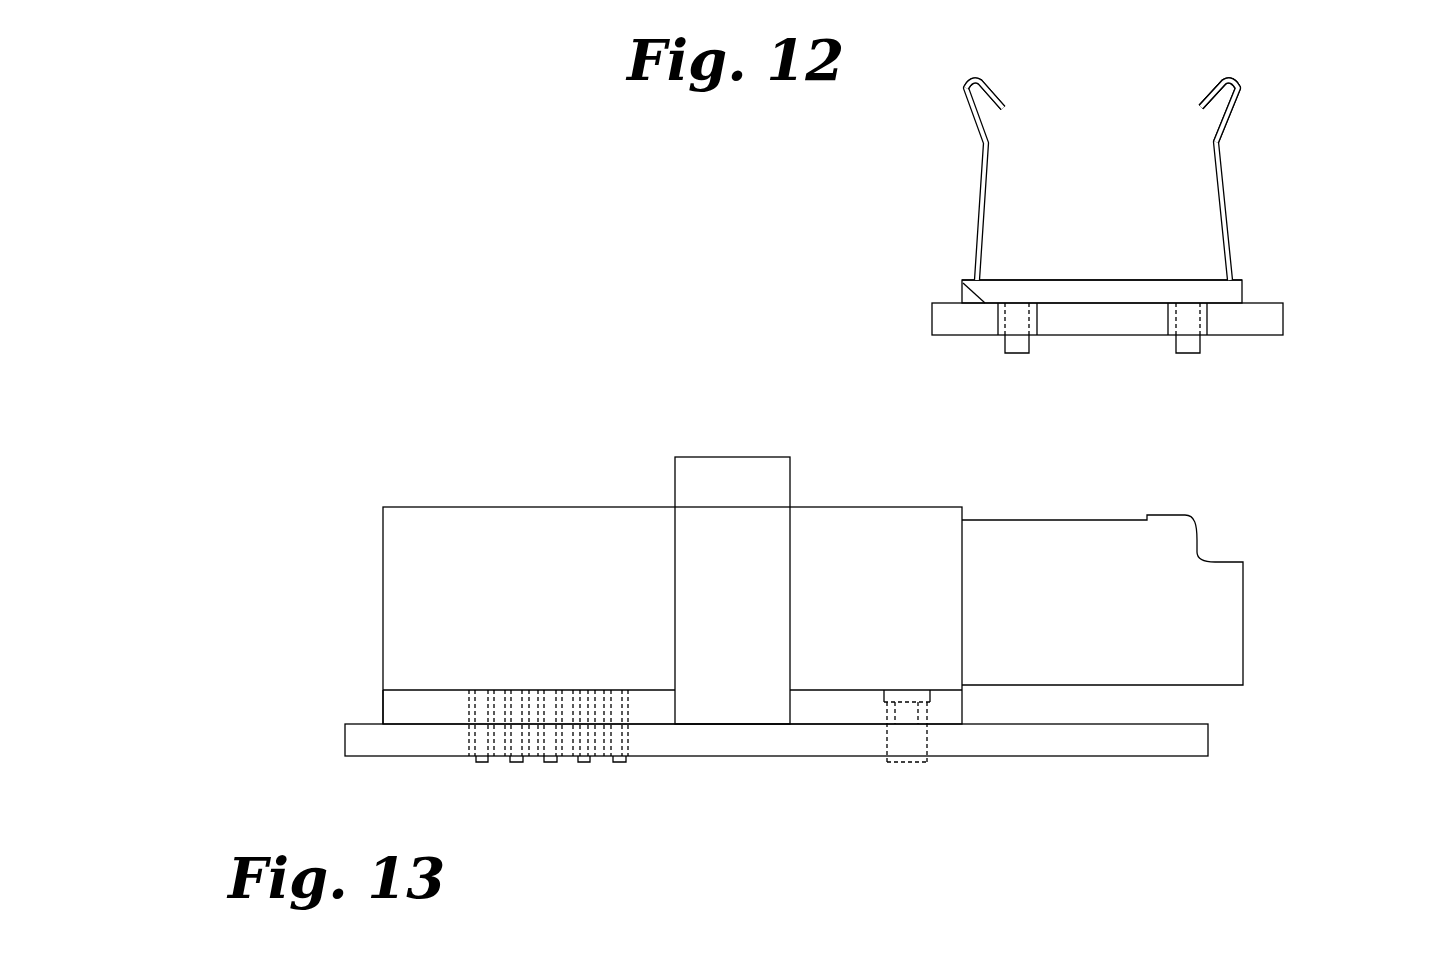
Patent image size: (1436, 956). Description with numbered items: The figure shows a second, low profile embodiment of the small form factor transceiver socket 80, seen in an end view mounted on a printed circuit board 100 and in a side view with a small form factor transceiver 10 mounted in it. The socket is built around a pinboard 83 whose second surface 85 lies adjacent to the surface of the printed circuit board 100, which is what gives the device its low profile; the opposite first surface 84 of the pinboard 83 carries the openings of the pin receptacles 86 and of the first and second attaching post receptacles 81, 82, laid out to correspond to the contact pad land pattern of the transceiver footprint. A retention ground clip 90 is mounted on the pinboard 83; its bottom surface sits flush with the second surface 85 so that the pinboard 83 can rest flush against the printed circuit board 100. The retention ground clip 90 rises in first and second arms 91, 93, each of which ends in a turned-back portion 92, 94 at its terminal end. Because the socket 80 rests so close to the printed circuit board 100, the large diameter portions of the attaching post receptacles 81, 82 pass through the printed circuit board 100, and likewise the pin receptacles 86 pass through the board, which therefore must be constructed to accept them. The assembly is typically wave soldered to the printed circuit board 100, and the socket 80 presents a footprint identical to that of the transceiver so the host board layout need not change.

In FIG. 13, the small form factor transceiver 10 is at (1040, 520).
In FIG. 12, the small form factor transceiver socket 80 is at (1243, 293).
In FIG. 13, the small form factor transceiver socket 80 is at (415, 702).
In FIG. 12, the first attaching post receptacle 81 is at (1022, 354).
In FIG. 13, the first attaching post receptacle 81 is at (910, 758).
In FIG. 12, the second attaching post receptacle 82 is at (1188, 354).
In FIG. 13, the pinboard 83 is at (383, 713).
In FIG. 12, the first surface 84 is at (1112, 279).
In FIG. 12, the second surface 85 is at (963, 283).
In FIG. 13, the pin receptacles 86 is at (483, 763).
In FIG. 12, the retention ground clip 90 is at (1227, 213).
In FIG. 13, the retention ground clip 90 is at (740, 457).
In FIG. 12, the first arm 91 is at (1245, 90).
In FIG. 12, the turned-back portion 92 is at (1205, 93).
In FIG. 12, the second arm 93 is at (980, 173).
In FIG. 12, the turned-back portion 94 is at (962, 92).
In FIG. 12, the printed circuit board 100 is at (1238, 335).
In FIG. 13, the printed circuit board 100 is at (1062, 758).